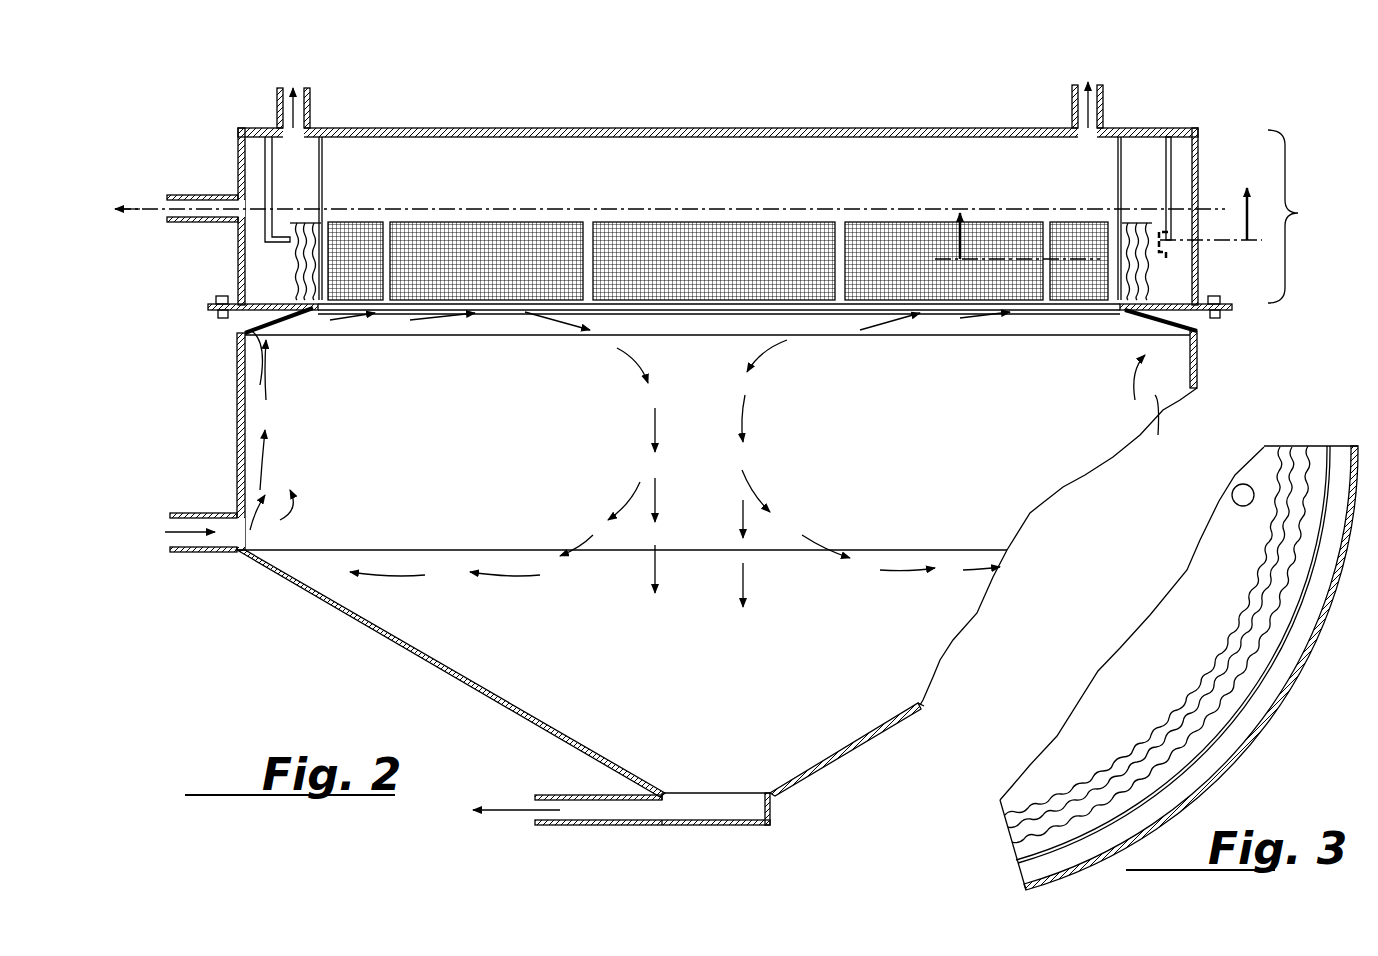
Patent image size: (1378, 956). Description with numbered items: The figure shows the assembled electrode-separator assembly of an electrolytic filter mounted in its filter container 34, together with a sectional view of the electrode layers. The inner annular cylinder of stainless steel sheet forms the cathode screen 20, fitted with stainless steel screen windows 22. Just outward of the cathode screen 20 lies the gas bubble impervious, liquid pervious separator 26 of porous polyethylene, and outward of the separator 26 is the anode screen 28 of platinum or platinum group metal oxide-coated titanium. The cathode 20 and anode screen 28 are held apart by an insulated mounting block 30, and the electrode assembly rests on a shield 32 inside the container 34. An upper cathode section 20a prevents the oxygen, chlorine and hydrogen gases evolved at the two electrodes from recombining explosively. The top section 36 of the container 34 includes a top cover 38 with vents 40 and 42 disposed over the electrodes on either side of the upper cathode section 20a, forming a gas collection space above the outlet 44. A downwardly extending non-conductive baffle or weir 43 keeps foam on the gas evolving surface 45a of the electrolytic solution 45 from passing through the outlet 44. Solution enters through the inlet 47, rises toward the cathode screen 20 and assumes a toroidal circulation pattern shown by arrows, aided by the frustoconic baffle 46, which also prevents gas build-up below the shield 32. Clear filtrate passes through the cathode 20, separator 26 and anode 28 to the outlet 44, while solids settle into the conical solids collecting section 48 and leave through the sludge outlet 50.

In FIG. 2, the cathode screen 20 is at (757, 300).
In FIG. 3, the cathode screen 20 is at (1154, 718).
In FIG. 2, the upper cathode section 20a is at (815, 160).
In FIG. 2, the stainless steel screen windows 22 is at (1122, 245).
In FIG. 3, the stainless steel screen windows 22 is at (1264, 556).
In FIG. 2, the separator 26 is at (1135, 232).
In FIG. 3, the separator 26 is at (1239, 659).
In FIG. 2, the anode screen 28 is at (1152, 228).
In FIG. 3, the anode screen 28 is at (1268, 619).
In FIG. 2, the insulated mounting block 30 is at (318, 310).
In FIG. 2, the shield 32 is at (288, 314).
In FIG. 2, the filter container 34 is at (313, 502).
In FIG. 2, the top section 36 is at (1130, 216).
In FIG. 3, the top section 36 is at (1324, 619).
In FIG. 2, the top cover 38 is at (638, 128).
In FIG. 3, the top cover 38 is at (1180, 600).
In FIG. 2, the vent 40 is at (310, 100).
In FIG. 2, the vent 42 is at (1103, 92).
In FIG. 3, the vent 42 is at (1243, 484).
In FIG. 2, the baffle or weir 43 is at (268, 155).
In FIG. 3, the baffle or weir 43 is at (1328, 448).
In FIG. 2, the outlet 44 is at (180, 197).
In FIG. 2, the electrolytic solution 45 is at (262, 258).
In FIG. 2, the gas evolving surface 45a is at (345, 209).
In FIG. 2, the frustoconic baffle 46 is at (260, 330).
In FIG. 2, the inlet 47 is at (205, 515).
In FIG. 2, the conical solids collecting section 48 is at (838, 760).
In FIG. 2, the sludge outlet 50 is at (605, 815).